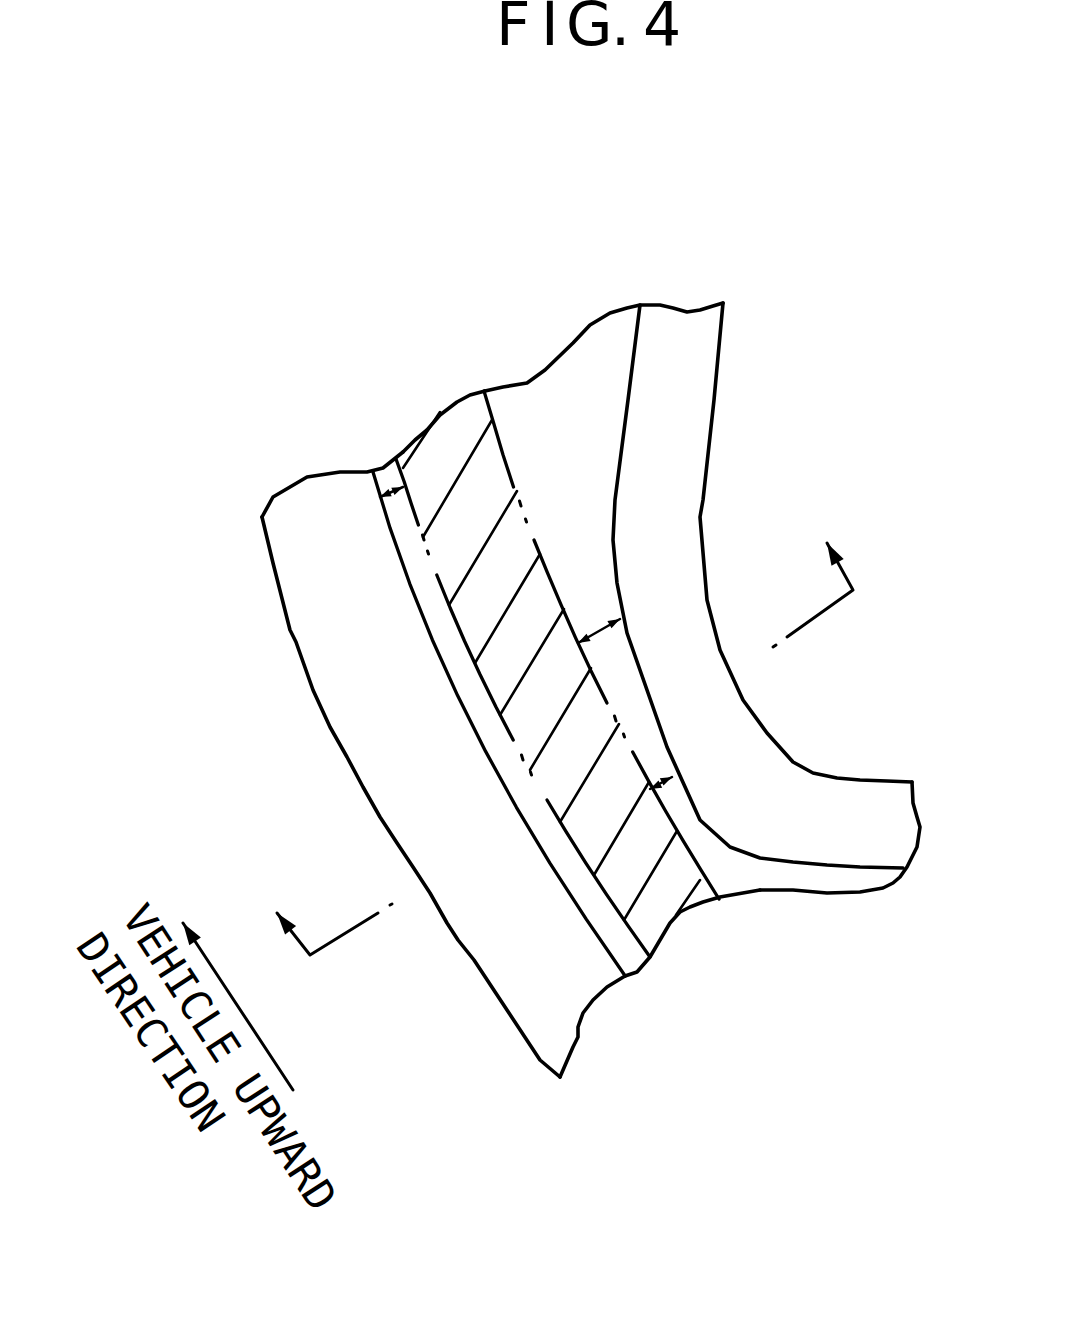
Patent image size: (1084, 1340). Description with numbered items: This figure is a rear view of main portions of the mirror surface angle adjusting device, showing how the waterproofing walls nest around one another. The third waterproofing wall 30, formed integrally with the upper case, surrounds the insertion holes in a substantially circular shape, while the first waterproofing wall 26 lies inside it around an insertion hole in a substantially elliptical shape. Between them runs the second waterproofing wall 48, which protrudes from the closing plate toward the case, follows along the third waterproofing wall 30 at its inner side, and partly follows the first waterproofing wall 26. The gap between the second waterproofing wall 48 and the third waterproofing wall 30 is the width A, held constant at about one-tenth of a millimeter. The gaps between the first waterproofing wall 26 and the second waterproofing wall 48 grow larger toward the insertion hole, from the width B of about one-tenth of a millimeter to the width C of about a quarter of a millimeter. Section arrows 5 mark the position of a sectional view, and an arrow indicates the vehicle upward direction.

The first waterproofing wall 26 is at (673, 343).
The third waterproofing wall 30 is at (300, 498).
The second waterproofing wall 48 is at (467, 410).
The width A is at (388, 485).
The width B is at (660, 780).
The width C is at (600, 628).
The section line of FIG. 5 is at (555, 726).